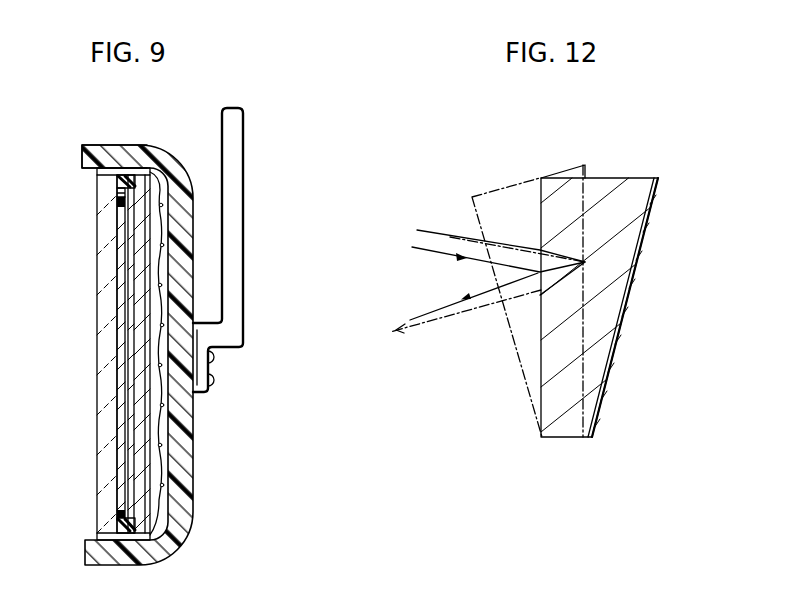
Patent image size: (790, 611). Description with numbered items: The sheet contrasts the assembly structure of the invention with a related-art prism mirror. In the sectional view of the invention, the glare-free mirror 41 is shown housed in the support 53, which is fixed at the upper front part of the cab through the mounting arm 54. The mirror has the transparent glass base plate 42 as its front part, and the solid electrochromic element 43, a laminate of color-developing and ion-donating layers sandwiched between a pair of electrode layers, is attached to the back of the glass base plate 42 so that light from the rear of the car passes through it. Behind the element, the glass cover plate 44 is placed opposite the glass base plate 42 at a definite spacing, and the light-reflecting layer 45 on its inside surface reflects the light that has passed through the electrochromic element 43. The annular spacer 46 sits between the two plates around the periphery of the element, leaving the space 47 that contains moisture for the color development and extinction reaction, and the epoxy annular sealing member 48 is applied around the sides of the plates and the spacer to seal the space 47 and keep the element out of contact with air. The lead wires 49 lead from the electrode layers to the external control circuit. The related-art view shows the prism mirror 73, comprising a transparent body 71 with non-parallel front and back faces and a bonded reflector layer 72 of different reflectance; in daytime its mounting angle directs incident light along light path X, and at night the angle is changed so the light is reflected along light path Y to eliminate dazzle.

In FIG. 9, the glare-free mirror 41 is at (50, 197).
In FIG. 9, the glass base plate 42 is at (97, 310).
In FIG. 9, the solid electrochromic element 43 is at (118, 262).
In FIG. 9, the glass cover plate 44 is at (140, 440).
In FIG. 9, the light-reflecting layer 45 is at (133, 382).
In FIG. 9, the annular spacer 46 is at (117, 180).
In FIG. 9, the space 47 is at (128, 490).
In FIG. 9, the annular sealing member 48 is at (133, 165).
In FIG. 9, the lead wires 49 is at (163, 465).
In FIG. 9, the support 53 is at (98, 160).
In FIG. 9, the mounting arm 54 is at (243, 185).
In FIG. 12, the transparent body 71 is at (549, 403).
In FIG. 12, the reflector layer 72 is at (611, 363).
In FIG. 12, the prism mirror 73 is at (522, 182).
In FIG. 12, the light path X is at (431, 232).
In FIG. 12, the light path Y is at (431, 252).